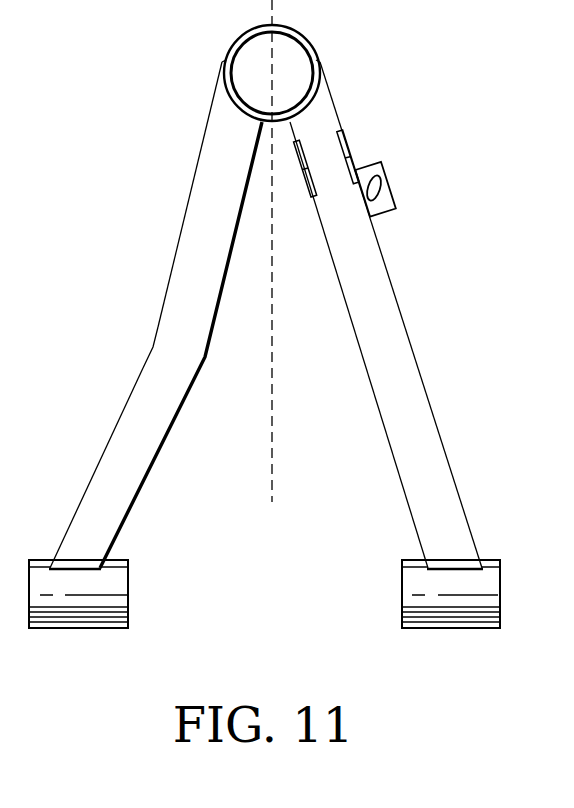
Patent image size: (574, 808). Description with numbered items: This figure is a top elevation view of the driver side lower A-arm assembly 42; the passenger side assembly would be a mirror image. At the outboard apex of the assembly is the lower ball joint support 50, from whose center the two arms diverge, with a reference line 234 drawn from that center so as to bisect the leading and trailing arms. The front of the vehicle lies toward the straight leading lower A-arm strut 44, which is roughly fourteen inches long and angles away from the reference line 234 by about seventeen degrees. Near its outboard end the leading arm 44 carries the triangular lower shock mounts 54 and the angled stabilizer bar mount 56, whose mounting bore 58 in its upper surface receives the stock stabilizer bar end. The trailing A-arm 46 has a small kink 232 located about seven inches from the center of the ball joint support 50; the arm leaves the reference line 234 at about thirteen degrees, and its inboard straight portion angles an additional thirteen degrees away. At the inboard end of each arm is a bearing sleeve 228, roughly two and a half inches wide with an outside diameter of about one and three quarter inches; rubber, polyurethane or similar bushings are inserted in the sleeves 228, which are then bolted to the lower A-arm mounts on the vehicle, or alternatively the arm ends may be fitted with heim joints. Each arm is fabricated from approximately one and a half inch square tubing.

The lower A-arm assembly 42 is at (148, 155).
The leading lower A-arm strut 44 is at (425, 383).
The trailing A-arm 46 is at (120, 418).
The lower ball joint support 50 is at (237, 36).
The lower shock mount 54 is at (349, 136).
The stabilizer bar mount 56 is at (388, 212).
The mounting bore 58 is at (380, 187).
The bearing sleeve 228 is at (117, 575).
The kink 232 is at (154, 347).
The reference line 234 is at (276, 398).